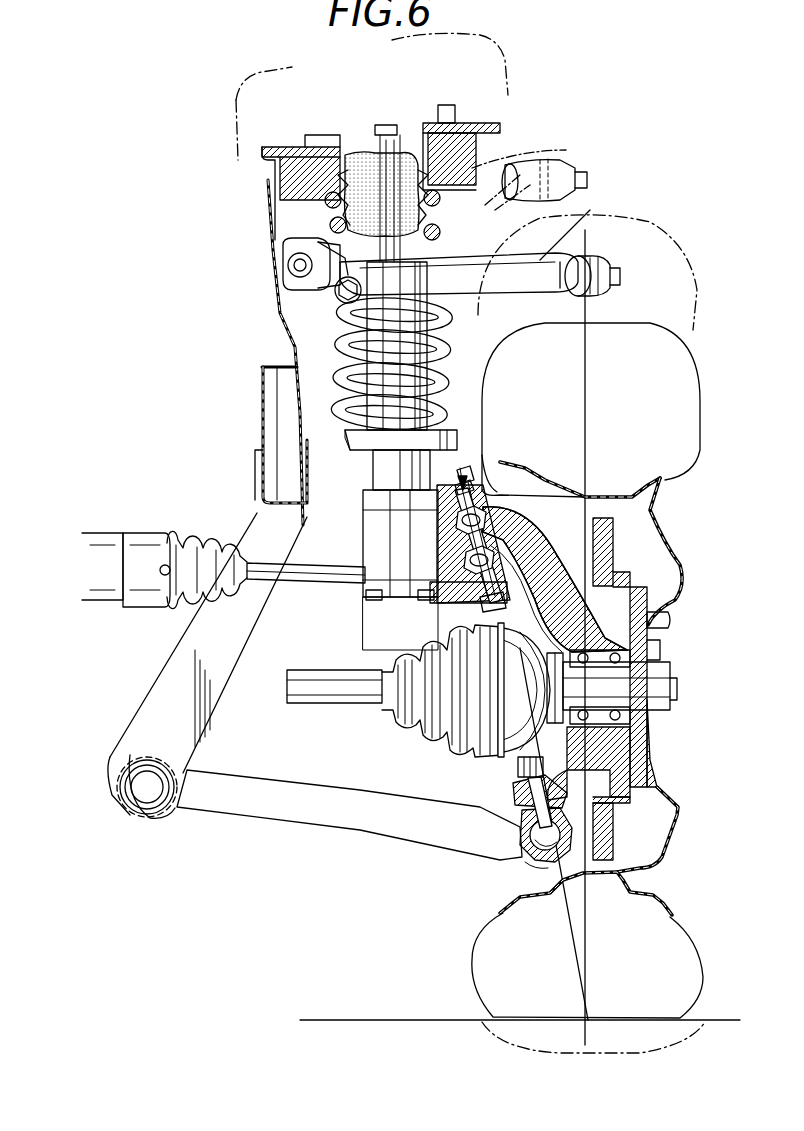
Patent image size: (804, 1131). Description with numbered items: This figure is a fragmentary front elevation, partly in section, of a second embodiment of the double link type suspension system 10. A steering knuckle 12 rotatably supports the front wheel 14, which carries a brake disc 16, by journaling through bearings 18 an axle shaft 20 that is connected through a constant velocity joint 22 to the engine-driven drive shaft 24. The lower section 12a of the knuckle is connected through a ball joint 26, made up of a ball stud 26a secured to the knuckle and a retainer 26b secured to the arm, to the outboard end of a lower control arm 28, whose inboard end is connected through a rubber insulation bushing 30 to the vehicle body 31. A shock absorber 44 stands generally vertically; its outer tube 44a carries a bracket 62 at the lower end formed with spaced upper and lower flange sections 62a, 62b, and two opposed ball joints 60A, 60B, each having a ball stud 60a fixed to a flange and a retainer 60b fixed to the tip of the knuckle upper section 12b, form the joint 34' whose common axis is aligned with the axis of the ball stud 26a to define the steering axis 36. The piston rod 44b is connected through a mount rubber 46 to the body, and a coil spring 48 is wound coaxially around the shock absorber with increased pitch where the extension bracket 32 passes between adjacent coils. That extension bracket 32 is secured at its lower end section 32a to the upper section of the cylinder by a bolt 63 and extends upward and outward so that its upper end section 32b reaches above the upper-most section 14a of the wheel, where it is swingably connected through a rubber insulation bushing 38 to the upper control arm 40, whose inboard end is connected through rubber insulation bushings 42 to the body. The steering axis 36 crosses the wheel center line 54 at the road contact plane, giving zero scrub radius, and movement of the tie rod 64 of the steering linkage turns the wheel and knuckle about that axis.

The suspension system 10 is at (212, 828).
The steering knuckle 12 is at (604, 630).
The lower section of the knuckle 12a is at (612, 775).
The upper section of the knuckle 12b is at (548, 575).
The front wheel 14 is at (680, 430).
The upper-most section of the wheel 14a is at (590, 324).
The brake disc 16 is at (615, 538).
The bearings 18 is at (655, 735).
The axle shaft 20 is at (660, 690).
The constant velocity joint 22 is at (480, 727).
The drive shaft 24 is at (310, 703).
The ball joint 26 is at (520, 852).
The ball stud 26a is at (515, 790).
The retainer 26b is at (528, 866).
The lower control arm 28 is at (305, 830).
The rubber insulation bushing 30 is at (140, 760).
The vehicle body 31 is at (262, 410).
The extension bracket 32 is at (503, 287).
The lower end section of the extension bracket 32a is at (318, 280).
The upper end section of the extension bracket 32b is at (555, 287).
The joint 34' is at (492, 434).
The steering axis 36 is at (500, 758).
The rubber insulation bushing 38 is at (613, 277).
The upper control arm 40 is at (575, 215).
The rubber insulation bushings 42 is at (283, 255).
The shock absorber 44 is at (330, 336).
The outer tube 44a is at (378, 465).
The piston rod 44b is at (357, 222).
The mount rubber 46 is at (312, 150).
The coil spring 48 is at (345, 372).
The wheel center line 54 is at (588, 930).
The ball stud 60a is at (488, 516).
The retainer 60b is at (497, 548).
The ball joint 60A is at (508, 466).
The ball joint 60B is at (488, 604).
The bracket 62 is at (365, 528).
The upper flange section 62a is at (470, 482).
The lower flange section 62b is at (450, 640).
The bolt 63 is at (335, 294).
The tie rod 64 is at (310, 585).